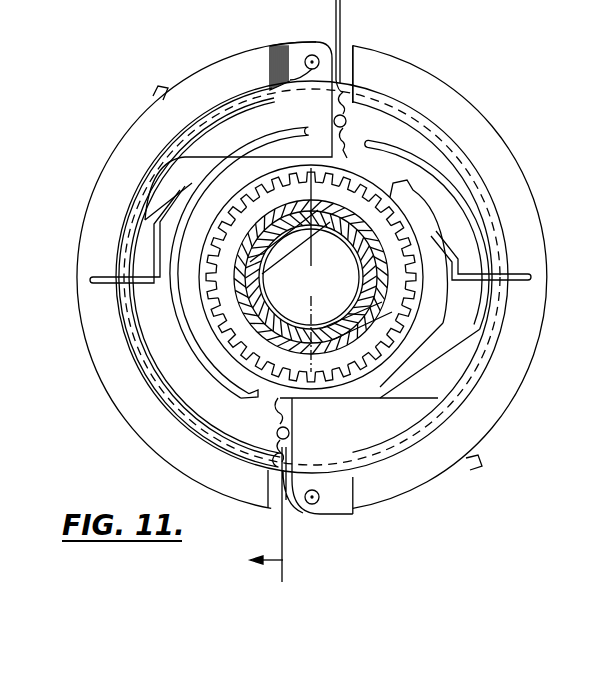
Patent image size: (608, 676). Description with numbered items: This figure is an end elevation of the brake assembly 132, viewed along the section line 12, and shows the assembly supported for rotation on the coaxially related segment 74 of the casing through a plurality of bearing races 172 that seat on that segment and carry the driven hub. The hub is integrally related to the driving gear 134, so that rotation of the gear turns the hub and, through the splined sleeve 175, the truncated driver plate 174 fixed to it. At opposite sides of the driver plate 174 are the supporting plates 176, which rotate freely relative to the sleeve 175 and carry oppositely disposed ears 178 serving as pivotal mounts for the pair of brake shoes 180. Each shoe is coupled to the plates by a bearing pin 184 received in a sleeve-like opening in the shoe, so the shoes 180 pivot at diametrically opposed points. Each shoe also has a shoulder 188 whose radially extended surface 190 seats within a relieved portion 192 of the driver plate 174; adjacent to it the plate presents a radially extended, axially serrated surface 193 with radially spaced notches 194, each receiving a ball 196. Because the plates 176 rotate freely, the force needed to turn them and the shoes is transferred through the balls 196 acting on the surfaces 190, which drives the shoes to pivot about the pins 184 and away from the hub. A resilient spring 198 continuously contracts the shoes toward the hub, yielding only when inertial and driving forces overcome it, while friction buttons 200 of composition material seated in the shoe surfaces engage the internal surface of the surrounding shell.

The section line 12 is at (284, 569).
The coaxially related segment 74 is at (311, 213).
The brake assembly 132 is at (195, 60).
The driving gear 134 is at (388, 385).
The bearing races 172 is at (337, 380).
The truncated driver plate 174 is at (166, 333).
The splined sleeve 175 is at (220, 343).
The supporting plates 176 is at (455, 410).
The ears 178 is at (302, 58).
The brake shoes 180 is at (522, 211).
The bearing pins 184 is at (272, 48).
The shoulder 188 is at (318, 113).
The radially extended surface 190 is at (341, 60).
The relieved portion 192 is at (450, 92).
The radially extended, axially serrated surface 193 is at (275, 404).
The notches 194 is at (340, 123).
The ball 196 is at (365, 96).
The resilient spring 198 is at (433, 193).
The buttons 200 is at (150, 96).